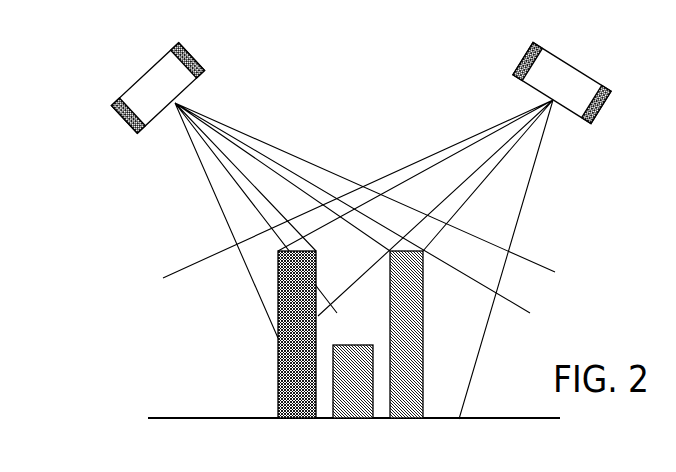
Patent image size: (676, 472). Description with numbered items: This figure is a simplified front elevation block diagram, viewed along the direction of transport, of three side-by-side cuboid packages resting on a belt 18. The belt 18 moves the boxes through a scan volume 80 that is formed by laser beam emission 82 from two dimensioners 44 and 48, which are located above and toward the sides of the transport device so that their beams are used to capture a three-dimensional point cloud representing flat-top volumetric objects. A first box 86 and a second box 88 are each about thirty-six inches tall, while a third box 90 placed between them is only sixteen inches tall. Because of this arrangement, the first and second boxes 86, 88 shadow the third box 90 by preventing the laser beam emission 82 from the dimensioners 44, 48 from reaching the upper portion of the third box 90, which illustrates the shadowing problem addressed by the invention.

The belt 18 is at (182, 416).
The dimensioner 44 is at (586, 75).
The dimensioner 48 is at (146, 76).
The scan volume 80 is at (347, 134).
The laser beam emission 82 is at (287, 147).
The first box 86 is at (278, 356).
The second box 88 is at (424, 323).
The third box 90 is at (368, 344).